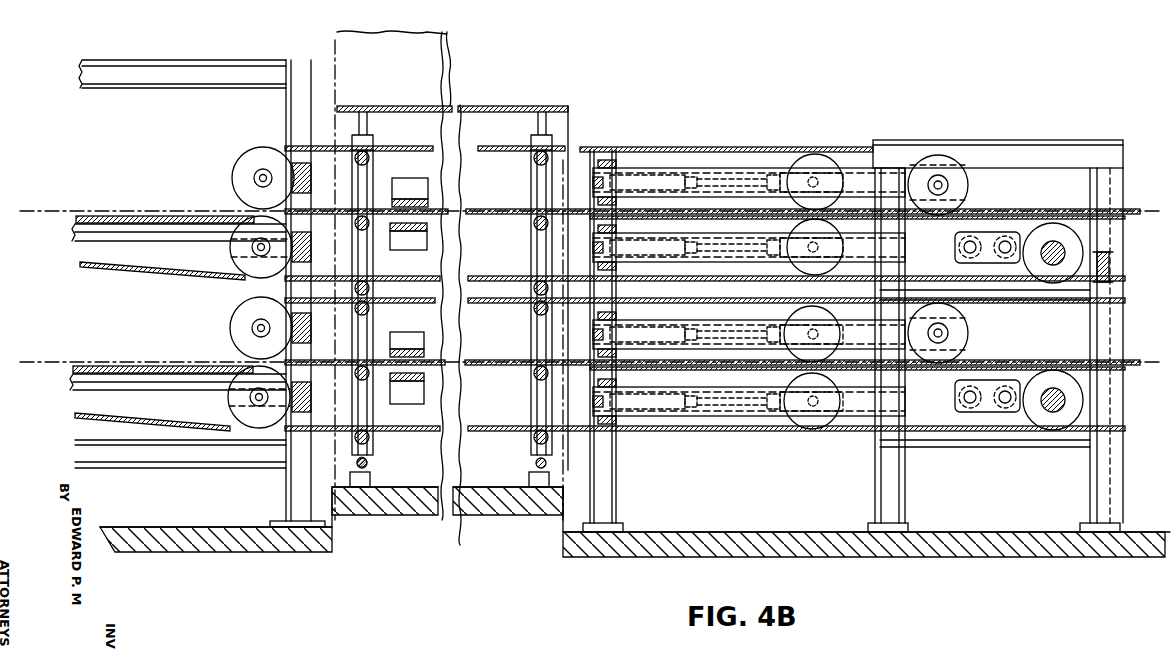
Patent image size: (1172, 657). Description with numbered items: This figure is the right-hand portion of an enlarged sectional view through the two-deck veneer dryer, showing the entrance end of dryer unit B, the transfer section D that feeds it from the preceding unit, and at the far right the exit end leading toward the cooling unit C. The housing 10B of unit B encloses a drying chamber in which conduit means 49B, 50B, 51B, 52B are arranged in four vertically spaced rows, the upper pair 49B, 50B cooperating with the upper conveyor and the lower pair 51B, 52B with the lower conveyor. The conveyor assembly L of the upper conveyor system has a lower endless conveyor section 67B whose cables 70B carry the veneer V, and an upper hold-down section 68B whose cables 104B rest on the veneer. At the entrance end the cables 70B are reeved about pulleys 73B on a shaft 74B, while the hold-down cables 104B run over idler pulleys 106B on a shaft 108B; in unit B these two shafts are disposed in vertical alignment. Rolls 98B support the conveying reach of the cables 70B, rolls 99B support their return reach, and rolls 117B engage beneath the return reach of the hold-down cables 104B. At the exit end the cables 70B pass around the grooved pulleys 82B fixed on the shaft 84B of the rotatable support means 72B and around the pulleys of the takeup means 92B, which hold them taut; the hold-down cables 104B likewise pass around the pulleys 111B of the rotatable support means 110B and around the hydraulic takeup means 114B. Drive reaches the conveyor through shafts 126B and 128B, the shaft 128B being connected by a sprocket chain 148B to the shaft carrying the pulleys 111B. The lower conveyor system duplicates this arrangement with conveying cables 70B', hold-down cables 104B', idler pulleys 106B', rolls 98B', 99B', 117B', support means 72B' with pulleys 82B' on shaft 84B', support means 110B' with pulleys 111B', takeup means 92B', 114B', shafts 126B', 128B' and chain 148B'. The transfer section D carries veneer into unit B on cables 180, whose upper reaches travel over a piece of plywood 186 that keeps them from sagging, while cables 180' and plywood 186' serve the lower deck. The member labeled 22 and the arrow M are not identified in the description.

The housing 10B is at (336, 50).
The support plate 22 is at (404, 92).
The endless hold-down members 104B is at (712, 268).
The endless hold-down members 104B' is at (479, 344).
The rolls 117B is at (452, 171).
The rolls 117B' is at (454, 324).
The rolls 98B is at (466, 318).
The rolls 98B' is at (448, 389).
The support rolls 99B is at (451, 305).
The support rolls 99B' is at (430, 447).
The conduit means 49B is at (433, 180).
The conduit means 50B is at (423, 244).
The conduit means 51B is at (413, 333).
The conduit means 52B is at (416, 403).
The lower endless belt-like section 67B is at (326, 222).
The upper endless belt-like section 68B is at (278, 142).
The idler pulleys 106B is at (218, 157).
The shaft 108B is at (255, 178).
The shaft 74B is at (252, 248).
The pulleys 73B is at (258, 265).
The idler pulleys 106B' is at (239, 328).
The rotatable support means 72B' is at (242, 397).
The cables 180 is at (164, 304).
The cables 180' is at (163, 352).
The plywood 186 is at (147, 237).
The plywood 186' is at (178, 360).
The direction of movement M is at (72, 186).
The veneer V is at (34, 211).
The conveyor assembly L is at (642, 148).
The hydraulically actuated takeup means 114B is at (749, 166).
The hydraulically actuated takeup means 114B' is at (749, 320).
The takeup means 92B is at (749, 214).
The takeup means 92B' is at (749, 383).
The endless conveying members 70B is at (573, 236).
The endless conveying members 70B' is at (560, 411).
The rotatable support means 110B is at (998, 166).
The pulleys 111B is at (996, 156).
The rotatable support means 110B' is at (986, 333).
The pulleys 111B' is at (995, 334).
The sprocket chain 148B is at (995, 216).
The shaft 128B is at (1032, 222).
The drive shaft 126B is at (987, 288).
The sprocket chain 148B' is at (948, 431).
The shaft 128B' is at (1033, 431).
The drive shaft 126B' is at (983, 446).
The rotatable support means 72B is at (1115, 196).
The pulleys 82B is at (1087, 253).
The shaft 84B is at (1106, 274).
The pulleys 82B' is at (1087, 400).
The shaft 84B' is at (1106, 425).
The transfer section D is at (184, 557).
The dryer unit B is at (390, 534).
The cooling unit C is at (508, 529).